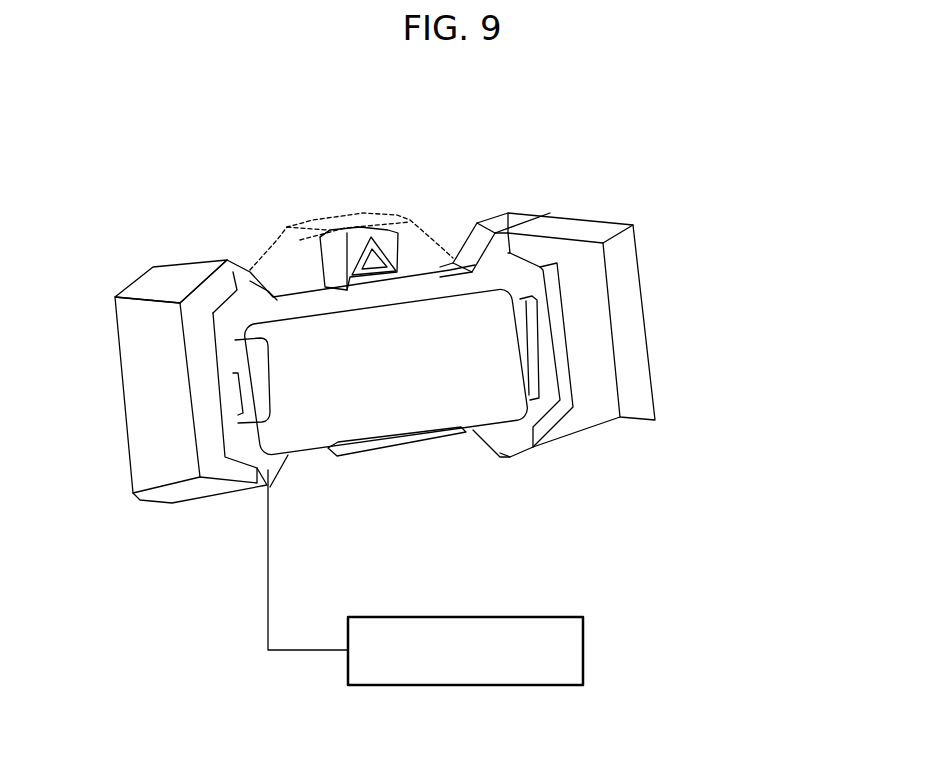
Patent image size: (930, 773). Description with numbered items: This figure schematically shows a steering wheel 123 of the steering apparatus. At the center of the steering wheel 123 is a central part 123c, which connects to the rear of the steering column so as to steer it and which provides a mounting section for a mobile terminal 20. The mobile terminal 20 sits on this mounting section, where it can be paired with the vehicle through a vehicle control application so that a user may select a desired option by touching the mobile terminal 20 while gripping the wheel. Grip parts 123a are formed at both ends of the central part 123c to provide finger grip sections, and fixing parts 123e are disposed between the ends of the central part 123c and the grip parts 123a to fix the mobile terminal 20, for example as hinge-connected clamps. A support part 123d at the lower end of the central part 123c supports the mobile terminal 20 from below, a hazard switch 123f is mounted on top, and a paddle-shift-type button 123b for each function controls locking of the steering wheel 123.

The steering wheel 123 is at (400, 100).
The grip parts 123a is at (203, 358).
The button for each function 123b is at (520, 692).
The central part 123c is at (465, 240).
The support part 123d is at (415, 447).
The fixing parts 123e is at (257, 397).
The hazard switch 123f is at (358, 227).
The mobile terminal 20 is at (483, 397).